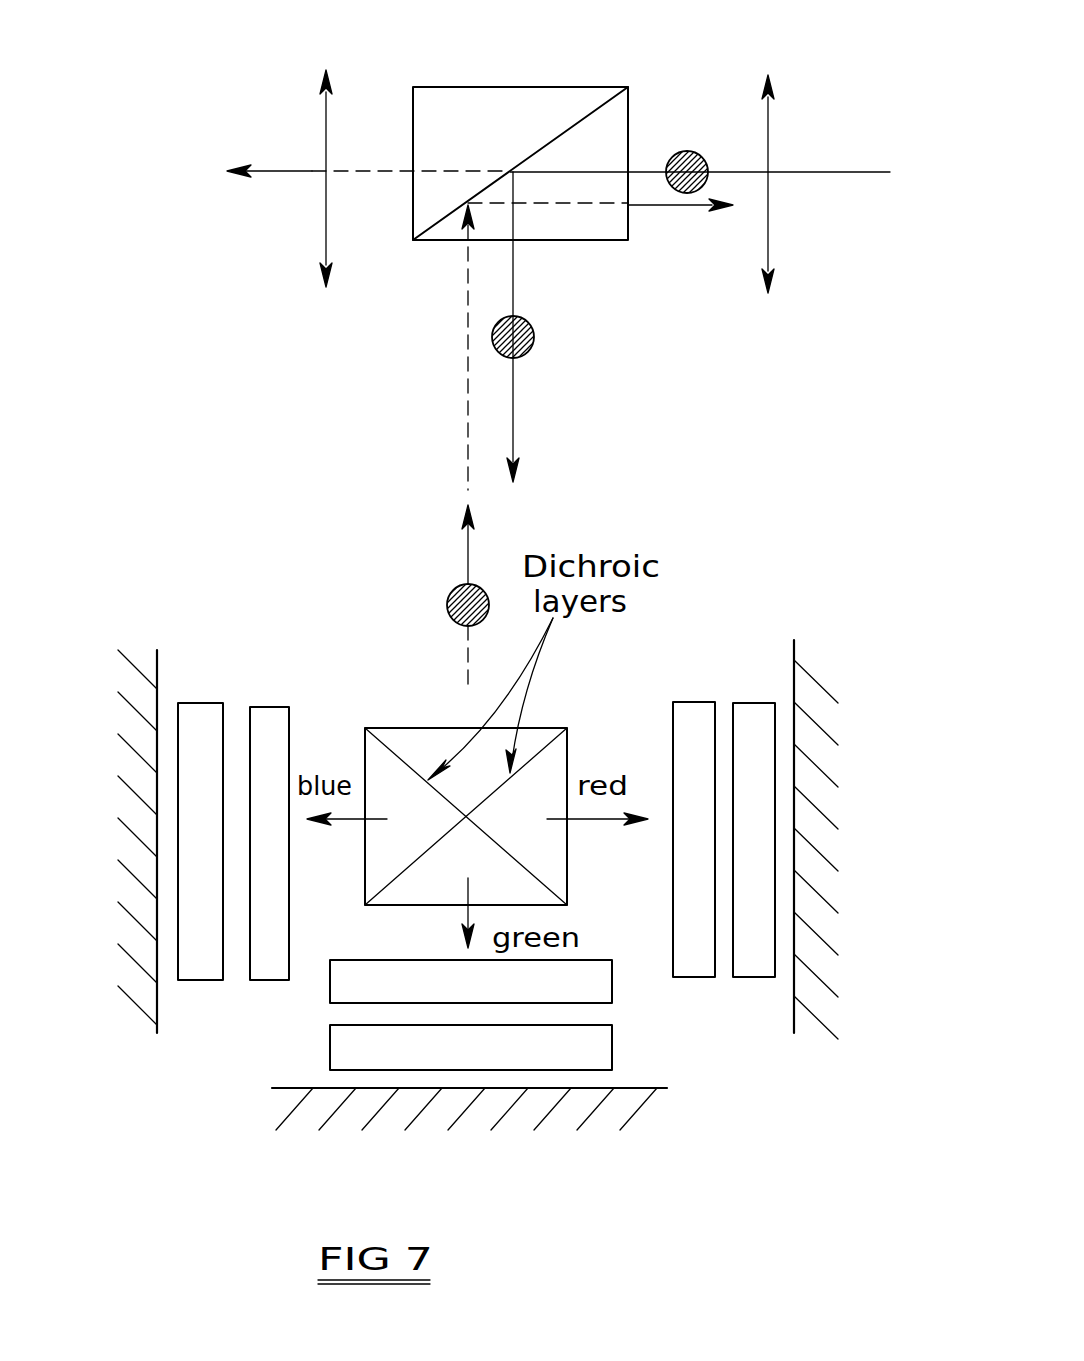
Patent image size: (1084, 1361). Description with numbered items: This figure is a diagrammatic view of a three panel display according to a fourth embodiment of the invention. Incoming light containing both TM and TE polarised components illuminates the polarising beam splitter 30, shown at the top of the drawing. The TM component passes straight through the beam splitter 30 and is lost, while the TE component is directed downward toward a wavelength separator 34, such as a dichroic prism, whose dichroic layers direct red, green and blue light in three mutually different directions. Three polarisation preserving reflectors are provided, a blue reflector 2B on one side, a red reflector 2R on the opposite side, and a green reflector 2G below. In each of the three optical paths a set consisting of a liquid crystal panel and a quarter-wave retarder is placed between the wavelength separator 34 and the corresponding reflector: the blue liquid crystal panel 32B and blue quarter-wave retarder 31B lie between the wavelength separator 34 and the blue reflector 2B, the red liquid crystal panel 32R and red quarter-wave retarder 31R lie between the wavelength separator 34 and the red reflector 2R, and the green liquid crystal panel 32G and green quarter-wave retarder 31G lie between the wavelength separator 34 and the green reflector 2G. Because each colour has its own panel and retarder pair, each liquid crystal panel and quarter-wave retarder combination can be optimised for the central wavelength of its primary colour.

The polarising beam splitter 30 is at (629, 108).
The wavelength separator 34 is at (393, 728).
The blue reflector 2B is at (129, 698).
The blue λ/4 retarder 31B is at (205, 703).
The blue liquid crystal panel 32B is at (262, 707).
The red reflector 2R is at (808, 986).
The red λ/4 retarder 31R is at (753, 703).
The red liquid crystal panel 32R is at (690, 702).
The green reflector 2G is at (307, 1112).
The green λ/4 retarder 31G is at (613, 1040).
The green liquid crystal panel 32G is at (330, 987).